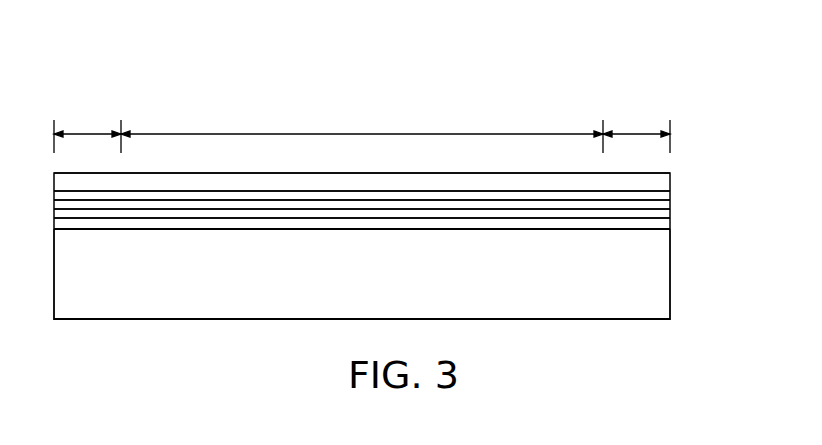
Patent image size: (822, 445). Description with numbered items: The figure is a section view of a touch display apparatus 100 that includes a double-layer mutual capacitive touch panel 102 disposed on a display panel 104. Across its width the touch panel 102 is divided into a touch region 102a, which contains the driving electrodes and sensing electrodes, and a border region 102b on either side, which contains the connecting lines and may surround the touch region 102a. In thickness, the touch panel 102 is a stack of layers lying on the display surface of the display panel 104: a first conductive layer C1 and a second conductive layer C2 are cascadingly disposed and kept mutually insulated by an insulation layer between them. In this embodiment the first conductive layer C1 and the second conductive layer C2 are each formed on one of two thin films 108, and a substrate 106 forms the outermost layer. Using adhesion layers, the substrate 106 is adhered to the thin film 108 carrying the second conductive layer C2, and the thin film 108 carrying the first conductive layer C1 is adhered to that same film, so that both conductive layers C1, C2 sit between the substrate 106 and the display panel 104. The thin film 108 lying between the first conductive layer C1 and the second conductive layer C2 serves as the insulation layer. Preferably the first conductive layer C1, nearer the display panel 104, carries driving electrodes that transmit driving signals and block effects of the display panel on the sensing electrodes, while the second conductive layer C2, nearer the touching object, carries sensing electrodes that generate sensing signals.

The touch display apparatus 100 is at (671, 84).
The double-layer mutual capacitive touch panel 102 is at (418, 179).
The touch region 102a is at (361, 131).
The border region 102b is at (362, 131).
The display panel 104 is at (655, 279).
The substrate 106 is at (664, 179).
The thin films 108 is at (670, 204).
The first conductive layer C1 is at (670, 213).
The second conductive layer C2 is at (668, 196).